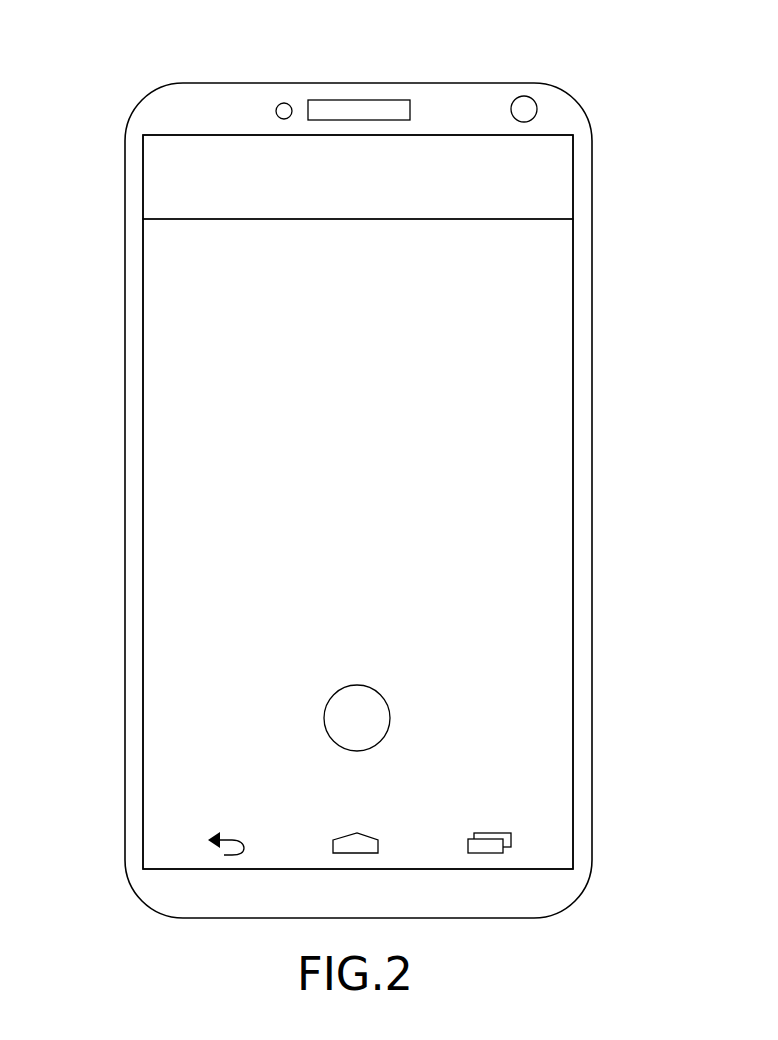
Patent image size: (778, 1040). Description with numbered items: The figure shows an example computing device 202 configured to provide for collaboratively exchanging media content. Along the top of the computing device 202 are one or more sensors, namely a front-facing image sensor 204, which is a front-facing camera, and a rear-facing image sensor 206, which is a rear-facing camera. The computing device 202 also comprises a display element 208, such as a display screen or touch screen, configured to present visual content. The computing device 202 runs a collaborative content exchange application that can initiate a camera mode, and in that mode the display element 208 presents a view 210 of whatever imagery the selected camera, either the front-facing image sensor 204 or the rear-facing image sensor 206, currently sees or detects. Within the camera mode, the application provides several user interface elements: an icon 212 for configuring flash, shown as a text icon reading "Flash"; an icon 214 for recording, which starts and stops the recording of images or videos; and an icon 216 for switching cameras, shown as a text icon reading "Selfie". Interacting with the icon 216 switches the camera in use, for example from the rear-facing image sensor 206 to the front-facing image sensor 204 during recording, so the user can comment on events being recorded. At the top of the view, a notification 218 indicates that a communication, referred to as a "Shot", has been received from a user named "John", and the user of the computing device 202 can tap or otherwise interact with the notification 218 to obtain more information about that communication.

The computing device 202 is at (155, 97).
The front-facing image sensor 204 is at (284, 103).
The rear-facing image sensor 206 is at (520, 97).
The display element 208 is at (574, 134).
The view 210 is at (540, 238).
The icon for configuring flash 212 is at (212, 697).
The icon for recording 214 is at (335, 678).
The icon for switching cameras 216 is at (502, 697).
The notification 218 is at (178, 165).